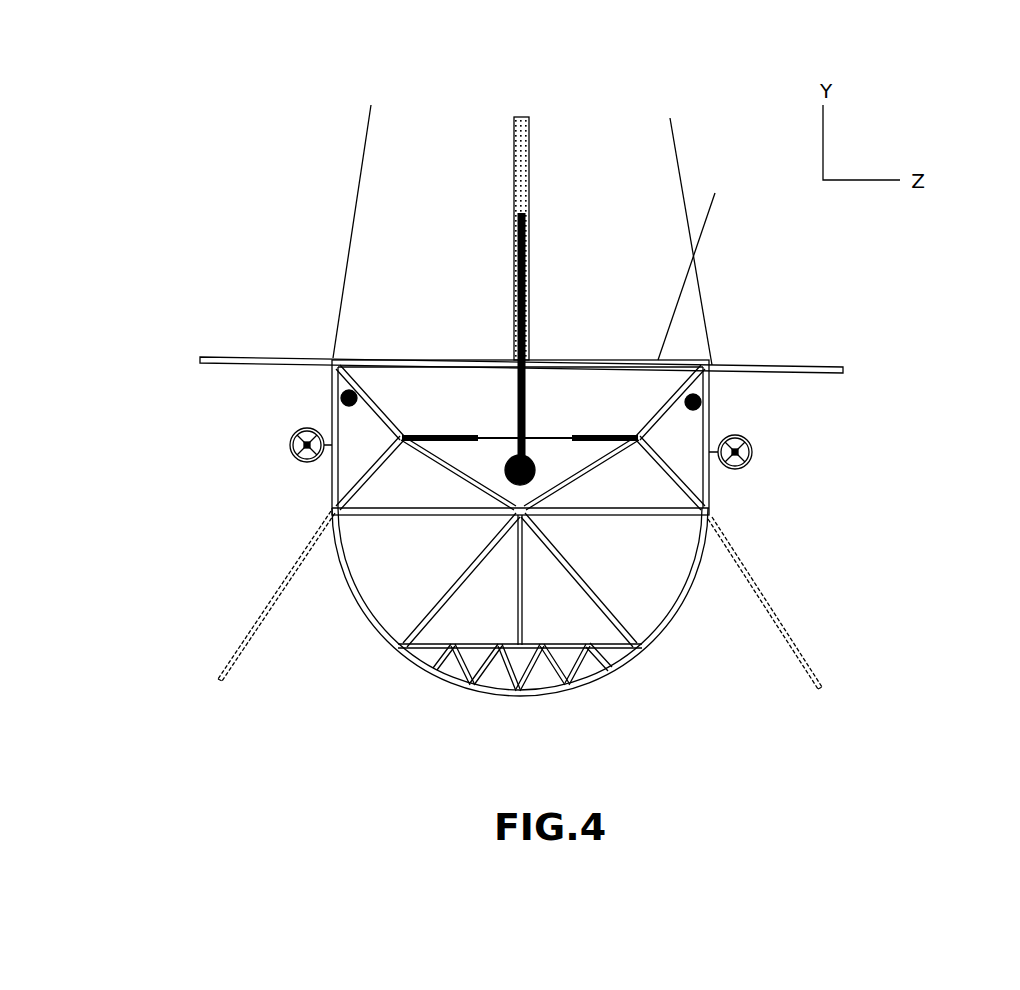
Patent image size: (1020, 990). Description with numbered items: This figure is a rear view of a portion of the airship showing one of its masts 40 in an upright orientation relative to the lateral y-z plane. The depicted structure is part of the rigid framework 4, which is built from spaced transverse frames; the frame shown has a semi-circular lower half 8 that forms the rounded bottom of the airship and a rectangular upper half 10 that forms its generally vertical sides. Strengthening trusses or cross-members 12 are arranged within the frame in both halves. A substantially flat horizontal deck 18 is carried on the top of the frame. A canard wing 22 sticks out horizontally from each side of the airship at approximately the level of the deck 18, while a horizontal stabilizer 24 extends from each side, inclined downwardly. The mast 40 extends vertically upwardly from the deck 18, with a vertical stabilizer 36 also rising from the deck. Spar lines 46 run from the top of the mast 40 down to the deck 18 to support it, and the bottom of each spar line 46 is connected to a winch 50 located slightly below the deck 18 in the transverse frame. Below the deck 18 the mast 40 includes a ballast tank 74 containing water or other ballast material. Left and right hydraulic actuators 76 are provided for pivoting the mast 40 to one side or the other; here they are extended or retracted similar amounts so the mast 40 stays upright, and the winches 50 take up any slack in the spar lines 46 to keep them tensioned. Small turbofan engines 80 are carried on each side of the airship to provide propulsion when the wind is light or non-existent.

The rigid framework 4 is at (418, 656).
The semi-circular lower half 8 is at (668, 627).
The rectangular upper half 10 is at (712, 493).
The cross-members 12 is at (681, 390).
The horizontal deck 18 is at (699, 265).
The canard wing 22 is at (225, 358).
The horizontal stabilizer 24 is at (240, 645).
The vertical stabilizer 36 is at (516, 255).
The mast 40 is at (524, 143).
The spar line 46 is at (367, 118).
The winch 50 is at (340, 398).
The ballast tank 74 is at (509, 481).
The hydraulic actuator 76 is at (467, 437).
The turbofan engine 80 is at (290, 447).